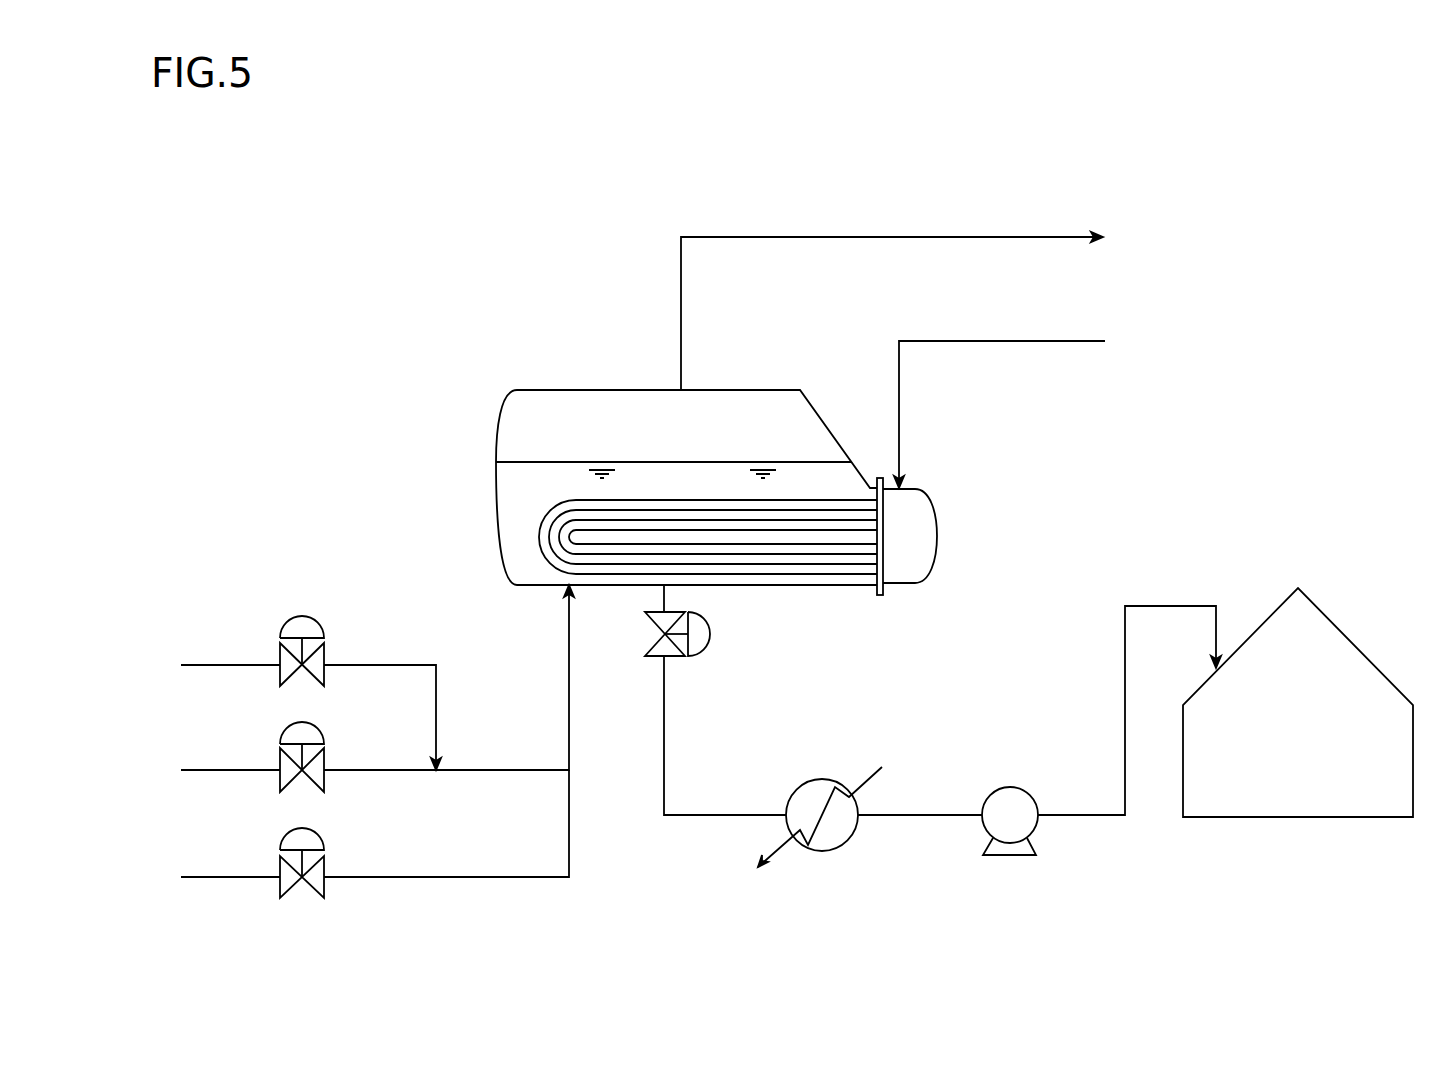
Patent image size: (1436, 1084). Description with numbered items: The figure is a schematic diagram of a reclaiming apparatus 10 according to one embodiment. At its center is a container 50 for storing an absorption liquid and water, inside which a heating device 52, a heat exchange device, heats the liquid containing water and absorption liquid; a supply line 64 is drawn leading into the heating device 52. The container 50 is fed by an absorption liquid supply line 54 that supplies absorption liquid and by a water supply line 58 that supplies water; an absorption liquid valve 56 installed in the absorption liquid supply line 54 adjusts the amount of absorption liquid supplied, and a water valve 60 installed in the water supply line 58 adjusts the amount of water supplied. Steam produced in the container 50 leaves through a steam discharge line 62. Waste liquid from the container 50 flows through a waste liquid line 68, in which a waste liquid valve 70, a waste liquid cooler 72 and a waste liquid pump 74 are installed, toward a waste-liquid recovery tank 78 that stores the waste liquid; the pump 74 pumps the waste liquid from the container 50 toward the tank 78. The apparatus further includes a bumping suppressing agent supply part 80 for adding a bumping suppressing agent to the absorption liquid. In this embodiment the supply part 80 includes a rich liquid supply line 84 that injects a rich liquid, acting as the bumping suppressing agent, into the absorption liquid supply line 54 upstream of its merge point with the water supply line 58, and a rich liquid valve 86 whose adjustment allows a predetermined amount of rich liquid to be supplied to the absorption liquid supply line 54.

The reclaiming apparatus 10 is at (1360, 218).
The container 50 is at (773, 388).
The heating device 52 is at (820, 574).
The absorption liquid supply line 54 is at (220, 768).
The absorption liquid valve 56 is at (318, 728).
The water supply line 58 is at (215, 880).
The water valve 60 is at (318, 835).
The steam discharge line 62 is at (818, 235).
The heating medium inlet line 64 is at (1012, 340).
The waste liquid line 68 is at (665, 742).
The waste liquid valve 70 is at (713, 645).
The waste liquid cooler 72 is at (822, 852).
The waste liquid pump 74 is at (1028, 788).
The waste-liquid recovery tank 78 is at (1378, 663).
The bumping suppressing agent supply part 80 is at (295, 600).
The rich liquid supply line 84 is at (220, 663).
The rich liquid valve 86 is at (318, 621).